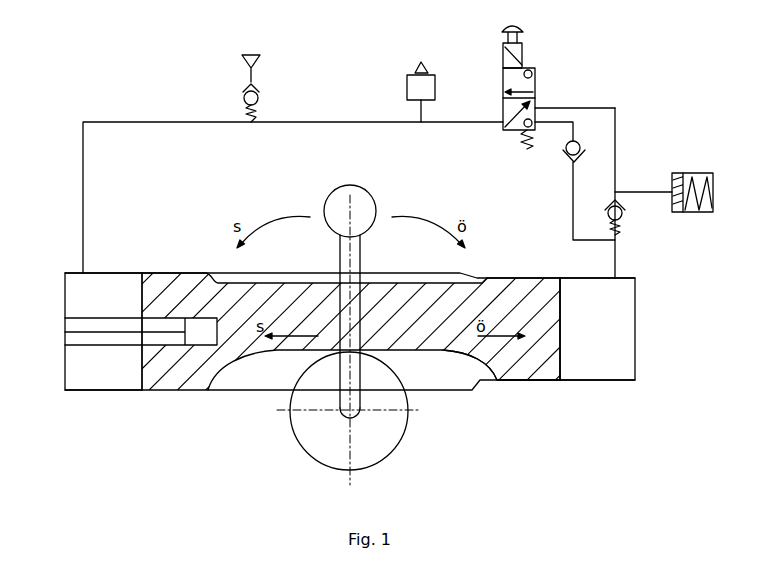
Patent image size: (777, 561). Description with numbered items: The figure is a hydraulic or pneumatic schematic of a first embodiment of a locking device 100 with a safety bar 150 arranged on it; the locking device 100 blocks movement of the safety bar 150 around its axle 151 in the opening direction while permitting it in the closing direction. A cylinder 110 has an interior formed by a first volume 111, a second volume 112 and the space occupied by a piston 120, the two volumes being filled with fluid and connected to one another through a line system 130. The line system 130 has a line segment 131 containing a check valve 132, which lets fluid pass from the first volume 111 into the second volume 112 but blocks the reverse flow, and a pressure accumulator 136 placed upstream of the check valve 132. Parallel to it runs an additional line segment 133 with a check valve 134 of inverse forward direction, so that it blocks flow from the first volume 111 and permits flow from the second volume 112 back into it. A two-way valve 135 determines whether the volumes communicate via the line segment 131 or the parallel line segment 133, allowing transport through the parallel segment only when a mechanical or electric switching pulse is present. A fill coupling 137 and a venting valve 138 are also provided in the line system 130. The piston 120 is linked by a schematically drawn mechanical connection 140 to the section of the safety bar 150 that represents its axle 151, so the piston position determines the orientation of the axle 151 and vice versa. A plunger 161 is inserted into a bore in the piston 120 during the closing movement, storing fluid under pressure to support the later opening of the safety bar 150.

The locking device 100 is at (245, 432).
The cylinder 110 is at (228, 392).
The first volume 111 is at (107, 392).
The second volume 112 is at (607, 376).
The piston 120 is at (514, 388).
The line system 130 is at (146, 122).
The line segment 131 is at (616, 136).
The check valve 132 is at (622, 229).
The additional line segment 133 is at (556, 108).
The check valve 134 is at (606, 117).
The valve 135 is at (522, 62).
The pressure accumulator 136 is at (702, 173).
The fill coupling 137 is at (244, 84).
The venting valve 138 is at (410, 68).
The mechanical connection 140 is at (396, 435).
The safety bar 150 is at (347, 187).
The axle 151 is at (342, 414).
The plunger 161 is at (72, 347).